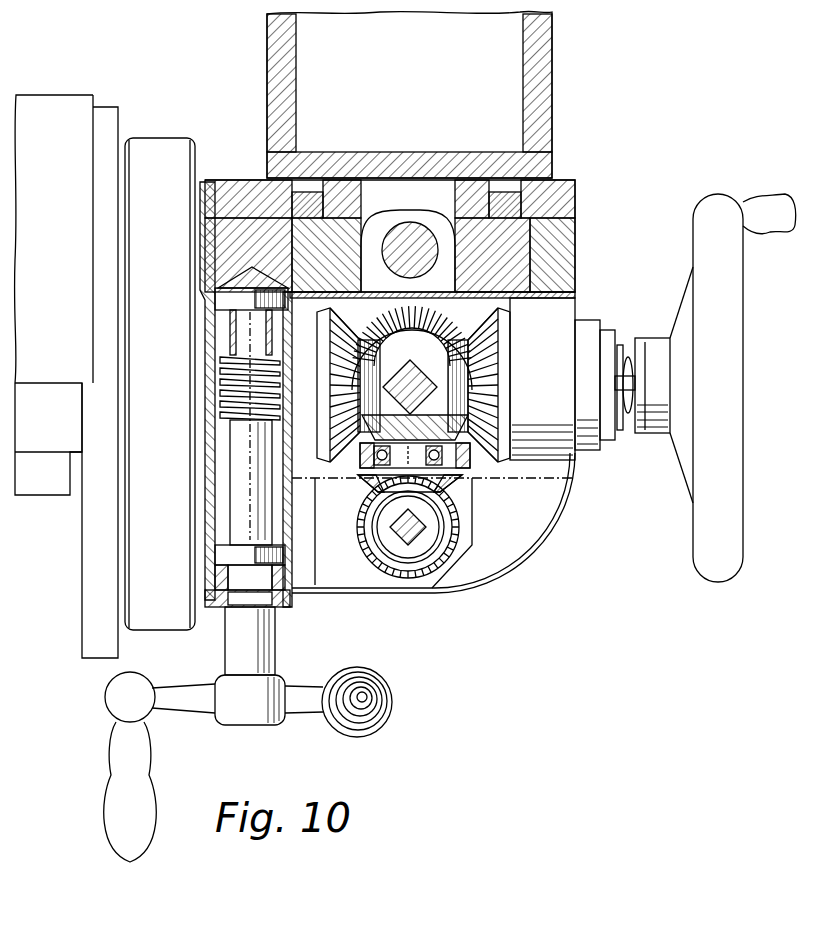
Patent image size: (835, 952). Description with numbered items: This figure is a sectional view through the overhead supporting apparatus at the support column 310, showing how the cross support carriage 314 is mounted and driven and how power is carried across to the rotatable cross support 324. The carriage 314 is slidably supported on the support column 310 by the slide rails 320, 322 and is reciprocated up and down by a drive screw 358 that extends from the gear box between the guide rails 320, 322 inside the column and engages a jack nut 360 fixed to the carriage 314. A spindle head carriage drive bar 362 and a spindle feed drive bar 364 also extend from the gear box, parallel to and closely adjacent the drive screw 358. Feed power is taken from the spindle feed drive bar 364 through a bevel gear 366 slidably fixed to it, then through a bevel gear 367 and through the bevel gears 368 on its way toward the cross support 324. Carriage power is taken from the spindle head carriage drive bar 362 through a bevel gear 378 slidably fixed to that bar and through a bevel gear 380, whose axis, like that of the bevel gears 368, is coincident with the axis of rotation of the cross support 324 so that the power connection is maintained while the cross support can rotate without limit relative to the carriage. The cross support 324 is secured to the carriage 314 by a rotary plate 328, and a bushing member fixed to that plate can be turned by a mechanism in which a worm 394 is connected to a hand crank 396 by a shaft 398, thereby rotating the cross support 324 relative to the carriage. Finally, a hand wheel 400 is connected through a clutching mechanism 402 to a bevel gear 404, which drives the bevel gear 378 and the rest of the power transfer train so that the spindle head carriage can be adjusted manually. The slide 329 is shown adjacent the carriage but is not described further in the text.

The support column 310 is at (540, 132).
The cross support carriage 314 is at (528, 536).
The slide rail 320 is at (335, 218).
The slide rail 322 is at (528, 265).
The cross support 324 is at (52, 108).
The rotary plate 328 is at (106, 115).
The slide 329 is at (166, 150).
The drive screw 358 is at (410, 240).
The jack nut 360 is at (396, 228).
The spindle head carriage drive bar 362 is at (414, 380).
The spindle feed drive bar 364 is at (424, 526).
The bevel gear 366 is at (372, 530).
The bevel gear 367 is at (372, 483).
The bevel gears 368 is at (373, 393).
The bevel gear 378 is at (410, 326).
The bevel gear 380 is at (322, 456).
The worm 394 is at (264, 422).
The hand crank 396 is at (248, 707).
The shaft 398 is at (262, 660).
The hand wheel 400 is at (725, 397).
The clutching mechanism 402 is at (628, 425).
The bevel gear 404 is at (503, 390).